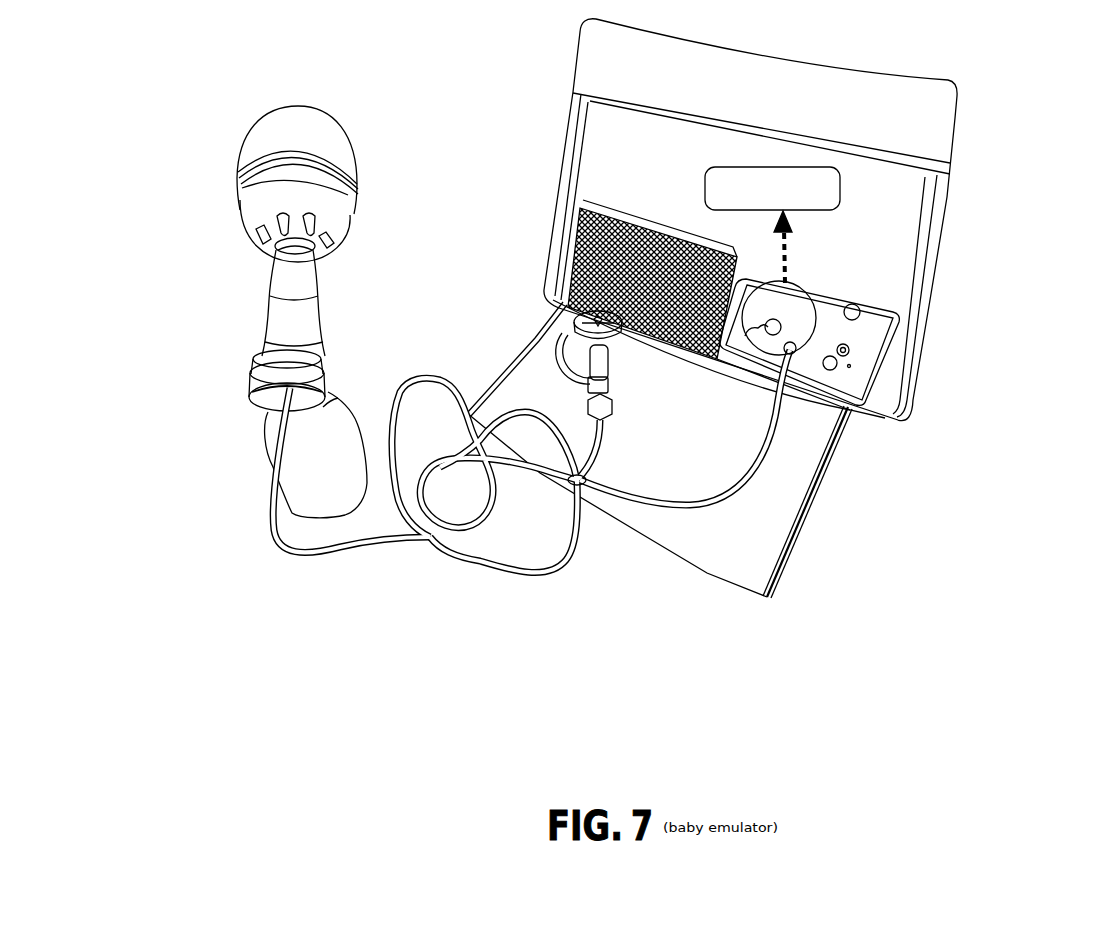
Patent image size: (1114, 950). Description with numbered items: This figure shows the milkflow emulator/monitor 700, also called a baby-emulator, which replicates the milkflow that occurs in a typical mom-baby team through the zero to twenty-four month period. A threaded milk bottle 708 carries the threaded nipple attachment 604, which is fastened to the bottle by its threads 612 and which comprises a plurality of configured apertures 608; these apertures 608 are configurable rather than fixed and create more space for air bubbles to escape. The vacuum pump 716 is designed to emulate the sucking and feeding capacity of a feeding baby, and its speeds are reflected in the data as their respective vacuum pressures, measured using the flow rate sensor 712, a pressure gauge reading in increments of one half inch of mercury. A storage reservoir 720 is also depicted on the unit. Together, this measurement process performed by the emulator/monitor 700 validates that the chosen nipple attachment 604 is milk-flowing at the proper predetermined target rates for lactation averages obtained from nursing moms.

The threaded milk bottle 708 is at (297, 127).
The threads 612 is at (340, 168).
The threaded nipple attachment 604 is at (333, 210).
The configured apertures 608 is at (261, 223).
The storage reservoir 720 is at (747, 183).
The vacuum pump 716 is at (793, 304).
The flow rate indicator 712 is at (620, 353).
The milkflow emulator/monitor 700 is at (413, 657).